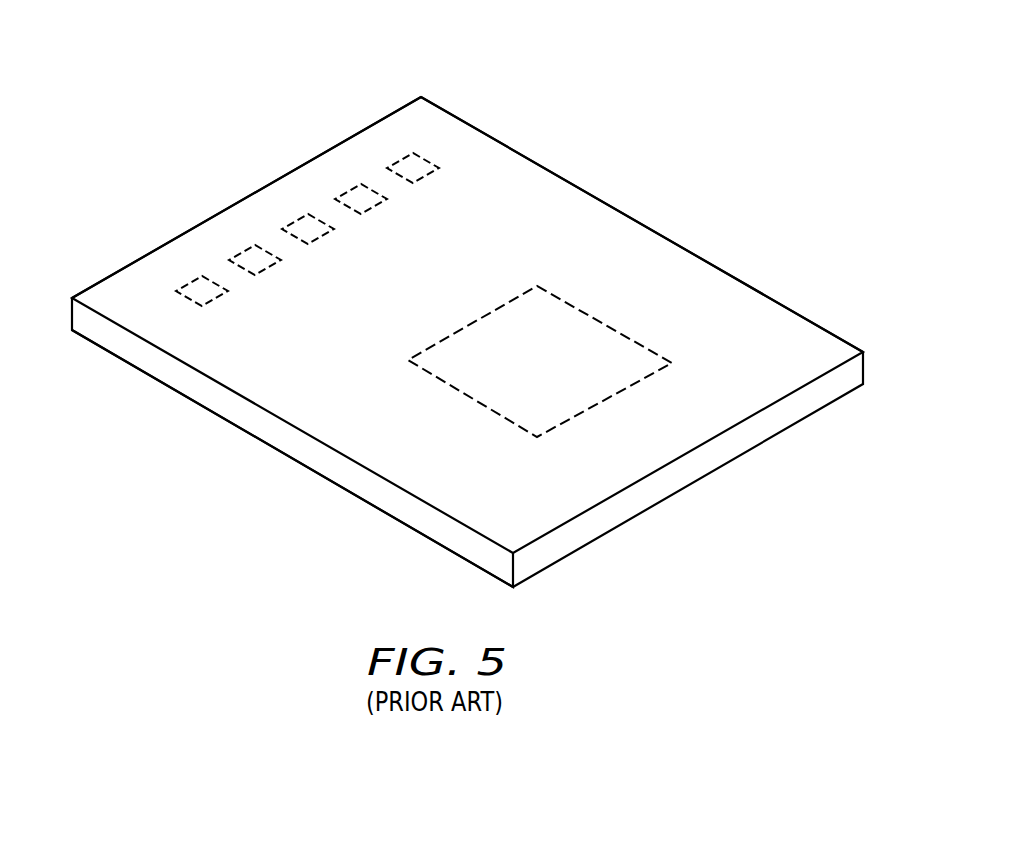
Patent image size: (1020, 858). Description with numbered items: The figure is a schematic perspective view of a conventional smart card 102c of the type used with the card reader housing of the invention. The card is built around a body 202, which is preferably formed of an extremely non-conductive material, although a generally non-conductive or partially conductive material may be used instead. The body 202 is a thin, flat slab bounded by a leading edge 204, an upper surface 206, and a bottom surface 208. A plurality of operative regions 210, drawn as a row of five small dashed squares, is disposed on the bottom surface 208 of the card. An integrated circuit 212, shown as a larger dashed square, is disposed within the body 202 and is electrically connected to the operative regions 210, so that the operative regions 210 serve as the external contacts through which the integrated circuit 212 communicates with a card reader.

The electronic module 102c is at (685, 201).
The body 202 is at (530, 183).
The leading edge 204 is at (152, 250).
The upper surface 206 is at (752, 320).
The bottom surface 208 is at (320, 476).
The operative regions 210 is at (358, 183).
The integrated circuit 212 is at (512, 383).